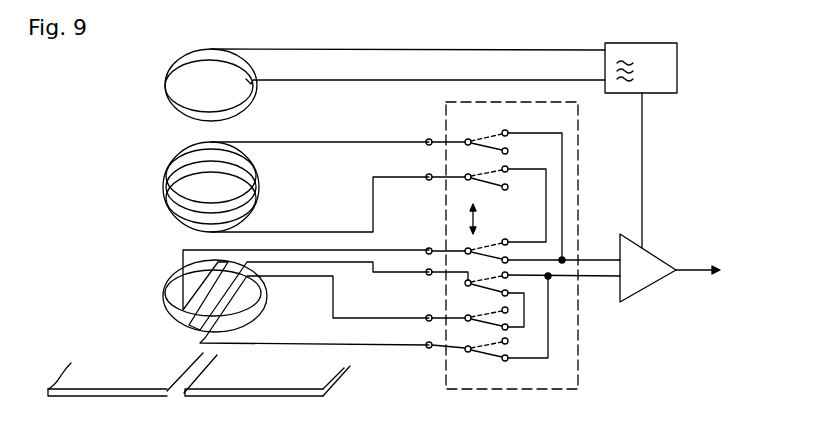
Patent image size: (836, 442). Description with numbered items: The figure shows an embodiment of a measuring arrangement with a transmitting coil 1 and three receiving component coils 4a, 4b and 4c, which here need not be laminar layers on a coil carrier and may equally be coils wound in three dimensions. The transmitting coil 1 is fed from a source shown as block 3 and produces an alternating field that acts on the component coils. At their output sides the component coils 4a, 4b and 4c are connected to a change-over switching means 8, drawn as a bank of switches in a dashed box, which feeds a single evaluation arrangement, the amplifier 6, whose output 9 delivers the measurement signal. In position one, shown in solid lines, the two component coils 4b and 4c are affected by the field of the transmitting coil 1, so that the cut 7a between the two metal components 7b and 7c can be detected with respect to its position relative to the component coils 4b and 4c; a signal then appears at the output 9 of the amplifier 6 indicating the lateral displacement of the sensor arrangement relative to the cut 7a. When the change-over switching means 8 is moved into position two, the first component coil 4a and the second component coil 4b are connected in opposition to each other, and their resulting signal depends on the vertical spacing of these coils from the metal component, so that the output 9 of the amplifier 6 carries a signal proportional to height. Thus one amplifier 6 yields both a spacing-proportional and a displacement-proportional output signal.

The transmitting coil 1 is at (165, 81).
The oscillator 3 is at (641, 145).
The first component coil 4a is at (165, 188).
The second component coil 4b is at (165, 294).
The component coil 4c is at (200, 338).
The amplifier 6 is at (648, 268).
The cut 7a is at (176, 398).
The metal component 7b is at (107, 379).
The metal component 7c is at (267, 380).
The change-over switching means 8 is at (579, 156).
The output 9 is at (707, 275).